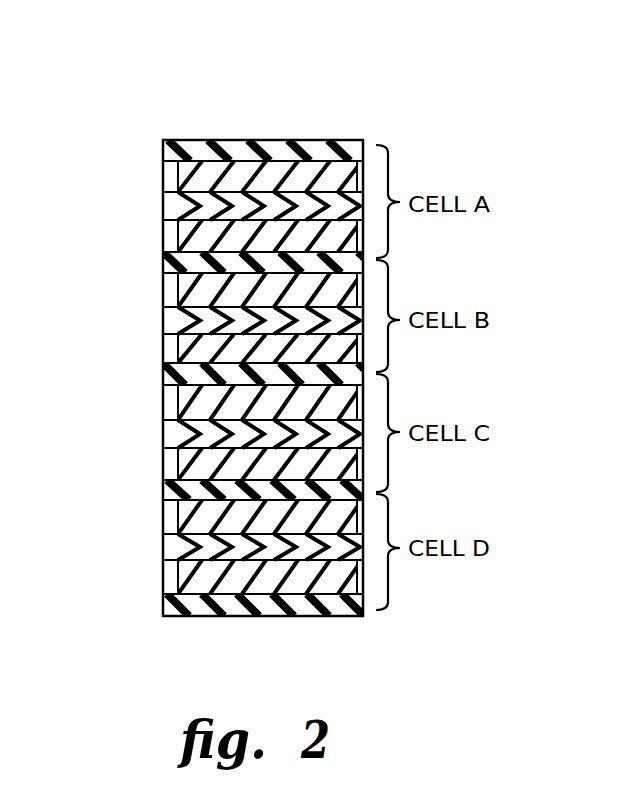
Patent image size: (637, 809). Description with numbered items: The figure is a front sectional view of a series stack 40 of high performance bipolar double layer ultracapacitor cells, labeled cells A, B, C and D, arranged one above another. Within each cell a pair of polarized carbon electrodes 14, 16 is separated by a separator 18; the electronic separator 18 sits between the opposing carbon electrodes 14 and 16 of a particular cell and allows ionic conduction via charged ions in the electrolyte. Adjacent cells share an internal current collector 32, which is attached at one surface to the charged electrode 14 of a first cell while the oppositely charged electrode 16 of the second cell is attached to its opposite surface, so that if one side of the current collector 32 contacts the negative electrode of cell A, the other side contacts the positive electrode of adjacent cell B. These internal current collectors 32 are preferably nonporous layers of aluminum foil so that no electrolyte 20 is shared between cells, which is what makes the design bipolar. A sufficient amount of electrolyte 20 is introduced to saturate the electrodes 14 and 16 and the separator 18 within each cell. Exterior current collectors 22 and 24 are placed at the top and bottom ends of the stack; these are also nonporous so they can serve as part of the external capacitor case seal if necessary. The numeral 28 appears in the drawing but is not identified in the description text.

The series stack 40 is at (149, 123).
The polarized carbon electrode 14 is at (240, 170).
The polarized carbon electrode 16 is at (178, 232).
The separator 18 is at (181, 208).
The exterior current collector 22 is at (311, 150).
The exterior current collector 24 is at (242, 585).
The current collector 32 is at (178, 263).
The electrode edge margin (positive side) 28 is at (356, 178).
The electrolyte 20 is at (357, 406).